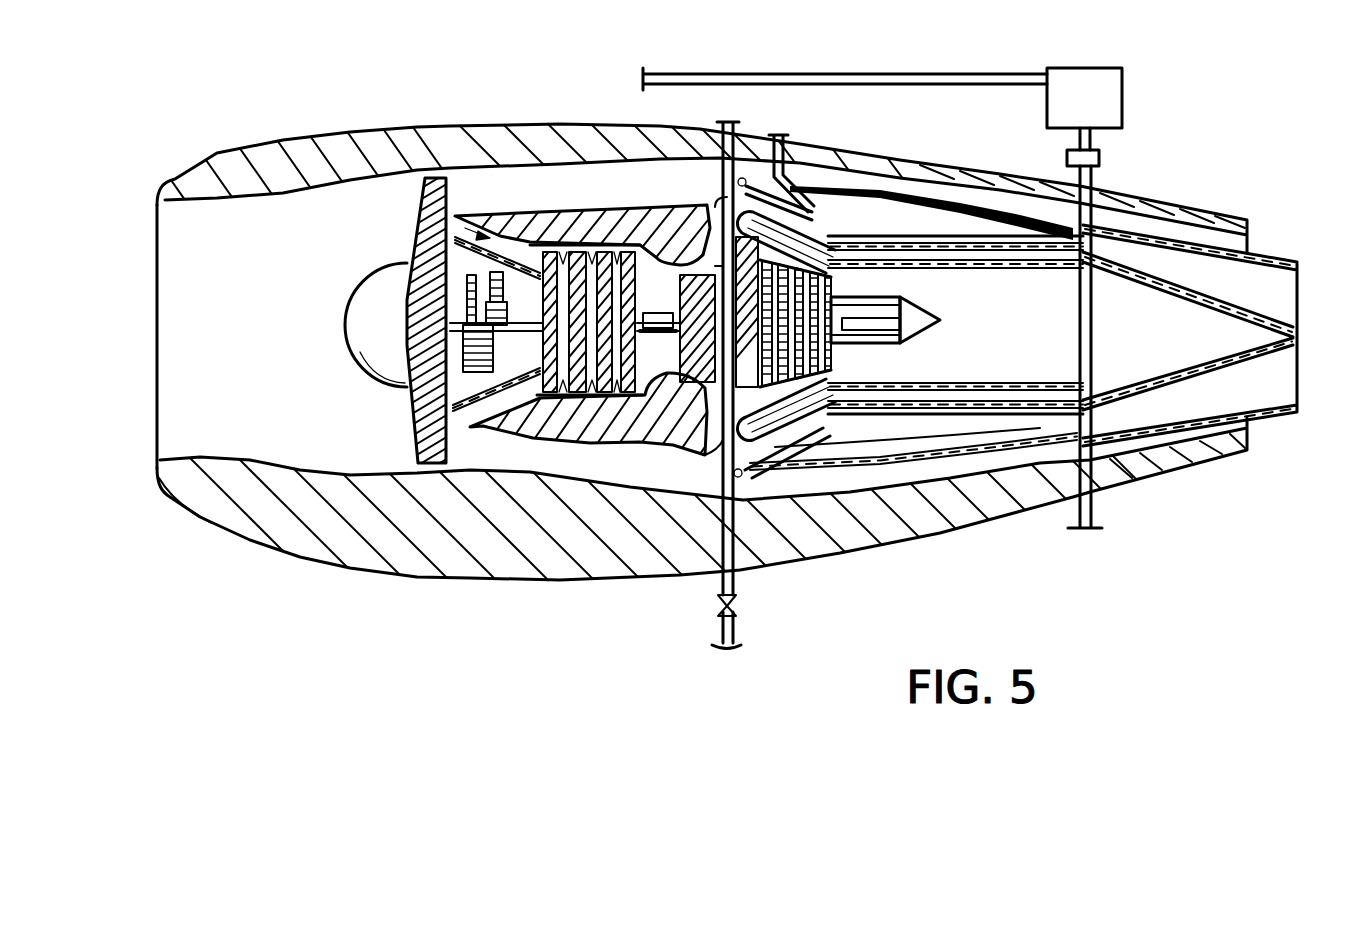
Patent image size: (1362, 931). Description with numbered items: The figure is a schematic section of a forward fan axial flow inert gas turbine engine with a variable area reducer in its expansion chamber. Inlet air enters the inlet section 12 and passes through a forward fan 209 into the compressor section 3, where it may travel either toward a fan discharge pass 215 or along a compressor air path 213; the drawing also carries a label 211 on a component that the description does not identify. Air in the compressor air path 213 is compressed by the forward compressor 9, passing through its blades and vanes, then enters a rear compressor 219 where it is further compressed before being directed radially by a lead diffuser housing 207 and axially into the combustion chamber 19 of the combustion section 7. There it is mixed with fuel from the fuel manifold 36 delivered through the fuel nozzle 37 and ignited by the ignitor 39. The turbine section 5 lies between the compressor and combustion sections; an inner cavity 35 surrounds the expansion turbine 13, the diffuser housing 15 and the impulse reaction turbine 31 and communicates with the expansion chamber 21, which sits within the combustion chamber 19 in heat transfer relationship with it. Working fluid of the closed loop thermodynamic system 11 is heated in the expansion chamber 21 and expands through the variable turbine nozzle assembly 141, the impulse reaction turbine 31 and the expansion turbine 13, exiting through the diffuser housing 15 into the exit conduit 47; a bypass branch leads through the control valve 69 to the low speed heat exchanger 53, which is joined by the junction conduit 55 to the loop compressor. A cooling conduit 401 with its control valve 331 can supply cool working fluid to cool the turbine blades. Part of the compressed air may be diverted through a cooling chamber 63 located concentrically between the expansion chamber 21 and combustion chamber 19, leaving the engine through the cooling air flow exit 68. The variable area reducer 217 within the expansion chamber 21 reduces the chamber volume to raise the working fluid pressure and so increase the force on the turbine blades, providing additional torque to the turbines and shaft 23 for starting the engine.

The inlet section 12 is at (120, 321).
The combustion chamber 19 is at (933, 223).
The forward fan 209 is at (420, 427).
The nose cone 211 is at (422, 253).
The compressor air path 213 is at (421, 220).
The fan discharge pass 215 is at (576, 193).
The shaft 23 is at (518, 315).
The forward compressor 9 is at (547, 396).
The compressor section 3 is at (596, 416).
The expansion turbine 13 is at (703, 410).
The diffuser housing 15 is at (693, 208).
The rear compressor 219 is at (684, 305).
The lead diffuser housing 207 is at (708, 458).
The variable turbine nozzle assembly 141 is at (833, 357).
The variable area reducer 217 is at (940, 344).
The inner cavity 35 is at (818, 222).
The cooling chamber 63 is at (1000, 262).
The impulse reaction turbine 31 is at (818, 417).
The fuel manifold 36 is at (743, 178).
The ignitor 39 is at (800, 175).
The fuel nozzle 37 is at (756, 175).
The turbine section 5 is at (768, 480).
The combustion section 7 is at (910, 476).
The exit conduit 47 is at (720, 130).
The cooling conduit 401 is at (734, 580).
The control valve 331 is at (734, 607).
The junction conduit 55 is at (860, 73).
The low speed heat exchanger 53 is at (1110, 93).
The control valve 69 is at (1100, 156).
The closed loop thermodynamic system 11 is at (1108, 175).
The cooling air flow exit 68 is at (1303, 317).
The expansion chamber 21 is at (1043, 333).